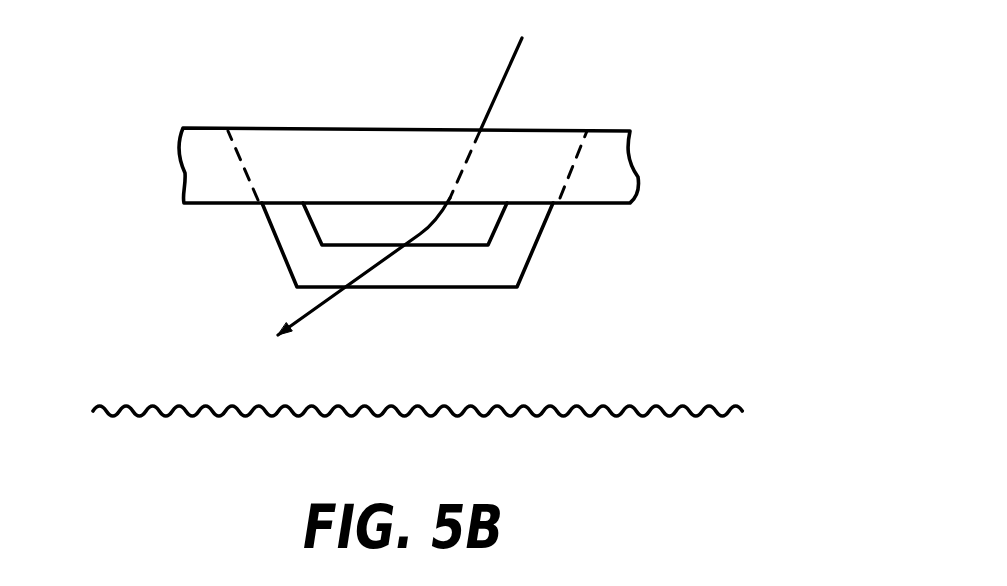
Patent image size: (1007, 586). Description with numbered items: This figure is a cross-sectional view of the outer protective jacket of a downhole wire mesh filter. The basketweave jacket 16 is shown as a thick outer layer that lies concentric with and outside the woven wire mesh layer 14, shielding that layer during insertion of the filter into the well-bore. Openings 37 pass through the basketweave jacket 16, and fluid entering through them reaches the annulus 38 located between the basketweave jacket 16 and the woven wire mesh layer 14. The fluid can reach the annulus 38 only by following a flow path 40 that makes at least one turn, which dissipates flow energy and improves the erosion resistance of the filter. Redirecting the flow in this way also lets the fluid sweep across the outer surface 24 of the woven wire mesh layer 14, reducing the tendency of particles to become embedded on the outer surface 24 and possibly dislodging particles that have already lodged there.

The woven wire mesh layer 14 is at (760, 410).
The basketweave jacket 16 is at (205, 122).
The outer surface 24 is at (642, 382).
The openings 37 is at (540, 118).
The annulus 38 is at (513, 338).
The flow path 40 is at (507, 67).